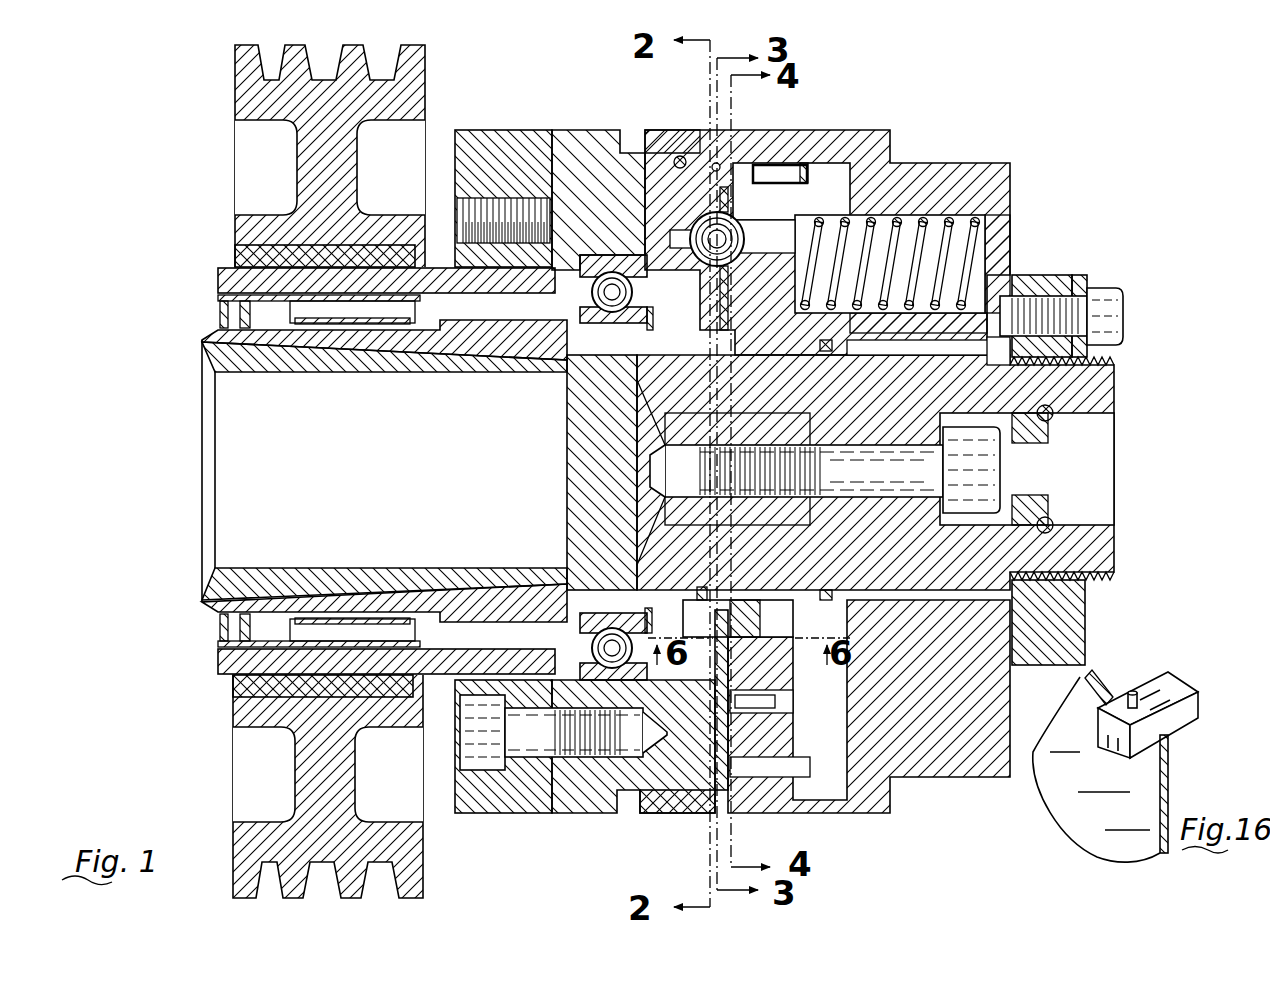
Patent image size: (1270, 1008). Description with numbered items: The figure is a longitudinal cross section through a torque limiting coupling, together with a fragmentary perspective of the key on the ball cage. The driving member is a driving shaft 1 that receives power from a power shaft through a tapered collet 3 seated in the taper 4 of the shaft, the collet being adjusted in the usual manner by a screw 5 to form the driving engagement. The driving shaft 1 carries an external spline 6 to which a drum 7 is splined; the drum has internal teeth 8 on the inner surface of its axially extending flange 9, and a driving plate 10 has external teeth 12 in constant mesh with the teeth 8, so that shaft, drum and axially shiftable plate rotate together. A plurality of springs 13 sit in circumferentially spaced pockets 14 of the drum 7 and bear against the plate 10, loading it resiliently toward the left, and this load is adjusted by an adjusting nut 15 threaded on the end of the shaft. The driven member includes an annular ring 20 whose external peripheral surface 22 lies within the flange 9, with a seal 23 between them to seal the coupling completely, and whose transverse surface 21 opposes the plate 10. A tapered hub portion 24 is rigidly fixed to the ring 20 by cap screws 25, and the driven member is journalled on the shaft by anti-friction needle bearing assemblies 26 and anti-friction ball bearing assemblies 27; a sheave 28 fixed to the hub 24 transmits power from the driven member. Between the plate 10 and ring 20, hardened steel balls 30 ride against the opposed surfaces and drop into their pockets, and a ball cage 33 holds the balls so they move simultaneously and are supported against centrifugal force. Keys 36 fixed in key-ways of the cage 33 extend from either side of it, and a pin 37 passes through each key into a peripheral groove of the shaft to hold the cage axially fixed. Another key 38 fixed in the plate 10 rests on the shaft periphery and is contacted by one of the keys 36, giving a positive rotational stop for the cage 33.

In FIG. 1, the driving shaft 1 is at (1103, 388).
In FIG. 1, the tapered collet 3 is at (335, 362).
In FIG. 1, the taper 4 is at (290, 356).
In FIG. 1, the screw 5 is at (915, 476).
In FIG. 1, the external spline 6 is at (975, 340).
In FIG. 1, the drum 7 is at (905, 163).
In FIG. 1, the internal teeth 8 is at (805, 170).
In FIG. 1, the axially extending flange 9 is at (652, 135).
In FIG. 1, the driving plate 10 is at (790, 203).
In FIG. 1, the external teeth 12 is at (742, 168).
In FIG. 1, the springs 13 is at (992, 228).
In FIG. 1, the pockets 14 is at (938, 222).
In FIG. 1, the adjusting nut 15 is at (1082, 634).
In FIG. 1, the annular ring 20 is at (583, 130).
In FIG. 1, the transverse surface 21 is at (712, 168).
In FIG. 1, the external peripheral surface 22 is at (627, 152).
In FIG. 1, the seal 23 is at (680, 156).
In FIG. 1, the tapered hub portion 24 is at (428, 268).
In FIG. 1, the cap screws 25 is at (470, 748).
In FIG. 1, the anti-friction needle bearing assemblies 26 is at (333, 598).
In FIG. 1, the anti-friction ball bearing assemblies 27 is at (596, 645).
In FIG. 1, the sheave 28 is at (243, 90).
In FIG. 1, the hardened steel balls 30 is at (745, 242).
In FIG. 1, the ball cage 33 is at (720, 197).
In FIG. 16, the ball cage 33 is at (1170, 790).
In FIG. 1, the keys 36 is at (768, 628).
In FIG. 16, the keys 36 is at (1175, 690).
In FIG. 1, the pin 37 is at (700, 590).
In FIG. 16, the pin 37 is at (1134, 692).
In FIG. 1, the key 38 is at (772, 340).